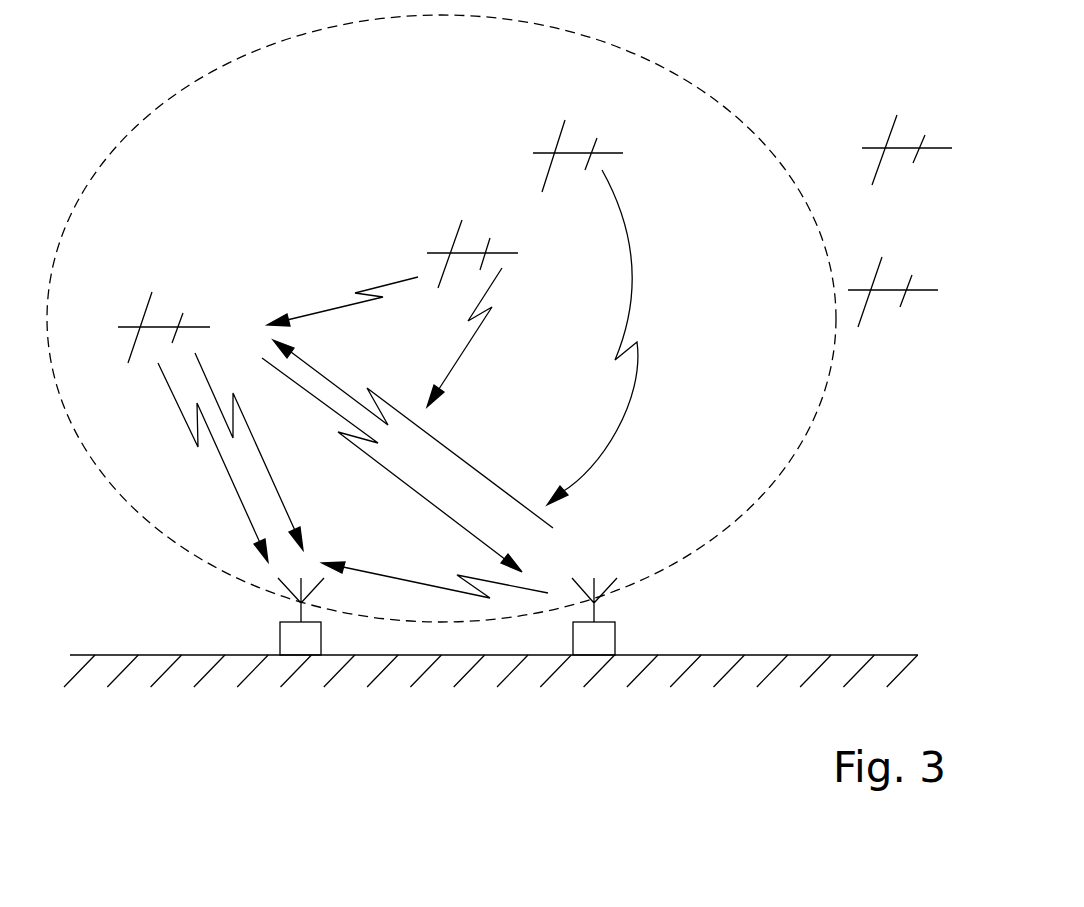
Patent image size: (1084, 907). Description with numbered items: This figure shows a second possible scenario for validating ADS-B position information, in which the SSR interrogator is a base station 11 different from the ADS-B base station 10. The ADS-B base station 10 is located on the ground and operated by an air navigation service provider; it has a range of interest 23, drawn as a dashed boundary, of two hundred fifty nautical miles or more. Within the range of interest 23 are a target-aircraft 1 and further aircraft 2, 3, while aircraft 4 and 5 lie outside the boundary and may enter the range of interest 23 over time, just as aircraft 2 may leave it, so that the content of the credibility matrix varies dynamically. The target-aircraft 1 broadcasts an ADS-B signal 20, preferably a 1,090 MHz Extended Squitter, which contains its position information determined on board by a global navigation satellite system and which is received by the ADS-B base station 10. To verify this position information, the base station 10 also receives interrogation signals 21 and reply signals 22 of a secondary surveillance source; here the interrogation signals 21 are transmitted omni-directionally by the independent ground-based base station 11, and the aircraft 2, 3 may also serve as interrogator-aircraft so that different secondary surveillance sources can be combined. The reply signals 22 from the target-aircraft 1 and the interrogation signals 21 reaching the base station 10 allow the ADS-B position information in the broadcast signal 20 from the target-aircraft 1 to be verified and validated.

The target-aircraft 1 is at (177, 290).
The interrogator-aircraft 2 is at (587, 120).
The interrogator-aircraft 3 is at (482, 219).
The aircraft 4 is at (905, 252).
The aircraft 5 is at (917, 105).
The ADS-B base station 10 is at (290, 637).
The base station 11 is at (597, 637).
The ADS-B signal 20 is at (465, 350).
The interrogation signals 21 is at (323, 310).
The reply signals 22 is at (262, 458).
The range of interest 23 is at (827, 393).